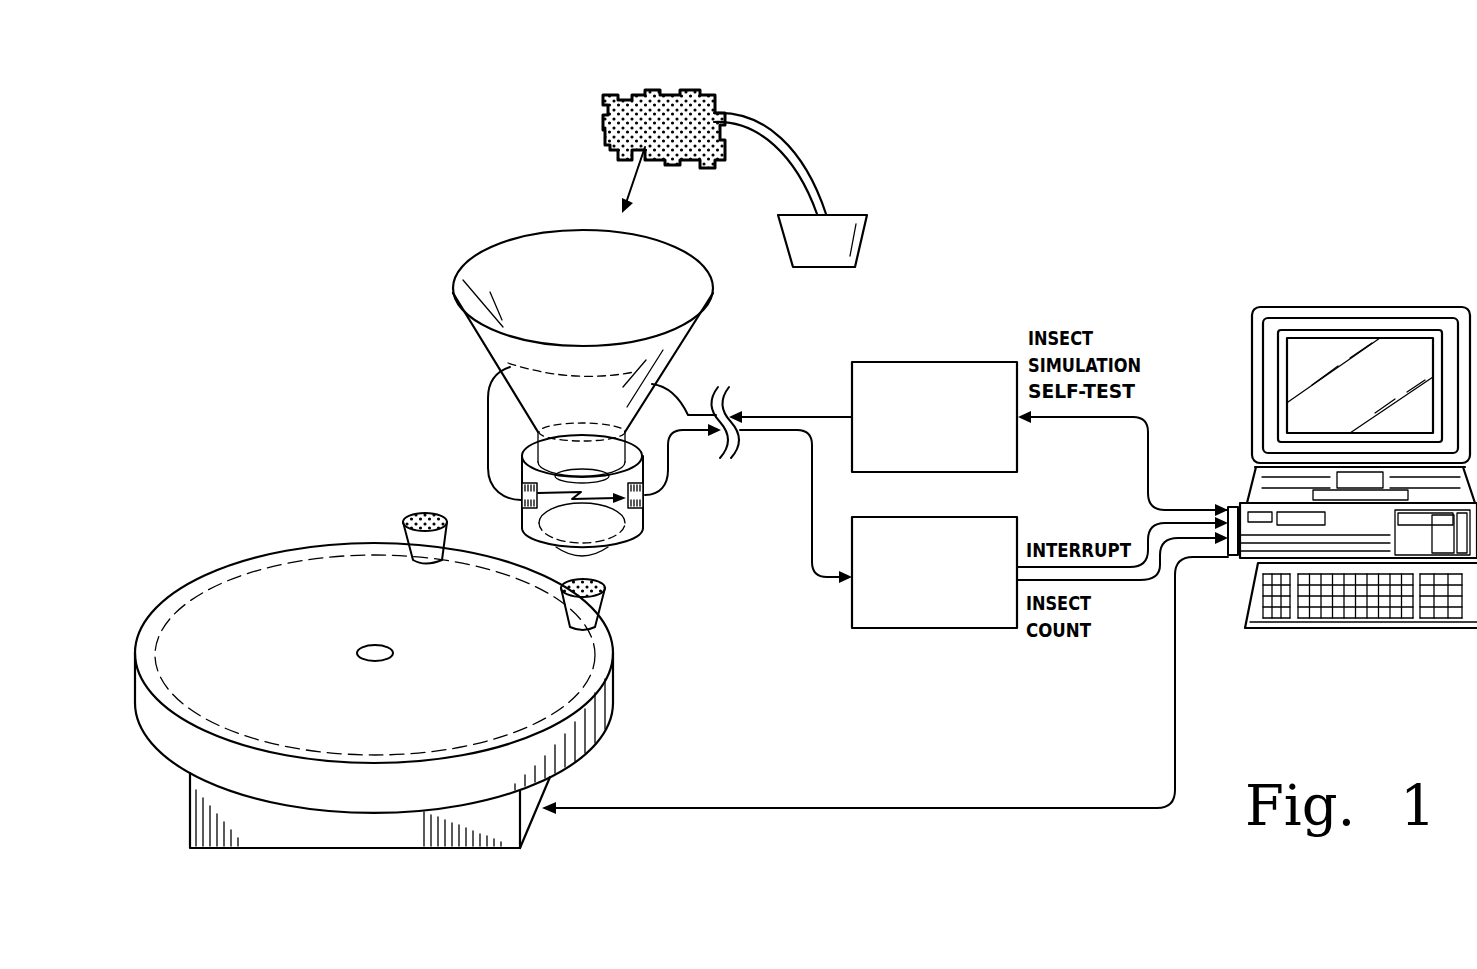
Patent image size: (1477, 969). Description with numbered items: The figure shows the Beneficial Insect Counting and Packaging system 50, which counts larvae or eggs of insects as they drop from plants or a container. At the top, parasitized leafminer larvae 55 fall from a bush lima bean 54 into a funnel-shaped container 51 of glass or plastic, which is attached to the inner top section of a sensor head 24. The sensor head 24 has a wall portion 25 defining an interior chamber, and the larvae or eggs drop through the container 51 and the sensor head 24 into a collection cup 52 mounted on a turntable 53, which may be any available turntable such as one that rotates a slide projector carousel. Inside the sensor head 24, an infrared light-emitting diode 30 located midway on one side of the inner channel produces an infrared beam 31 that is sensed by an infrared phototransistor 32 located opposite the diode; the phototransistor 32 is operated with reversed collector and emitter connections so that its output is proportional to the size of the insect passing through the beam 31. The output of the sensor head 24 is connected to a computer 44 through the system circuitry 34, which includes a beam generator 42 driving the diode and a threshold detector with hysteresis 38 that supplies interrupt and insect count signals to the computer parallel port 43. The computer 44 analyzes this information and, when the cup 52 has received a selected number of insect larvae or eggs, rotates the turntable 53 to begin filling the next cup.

The Beneficial insect counting and packaging (BICAP) system 50 is at (382, 205).
The funnel-shaped container 51 is at (453, 296).
The bush lima bean 54 is at (700, 100).
The parasitized leafminer larvae 55 is at (653, 143).
The sensor head 24 is at (643, 530).
The wall portion 25 is at (522, 517).
The infrared light-emitting diode (LED) 30 is at (520, 502).
The phototransistor 32 is at (645, 504).
The infrared beam 31 is at (600, 498).
The collection cup 52 is at (405, 530).
The turntable 53 is at (485, 740).
The circuitry 34 is at (1020, 262).
The beam generator 42 is at (918, 361).
The threshold detector with hysteresis 38 is at (918, 630).
The computer 44 is at (1400, 306).
The computer parallel port 43 is at (1230, 563).